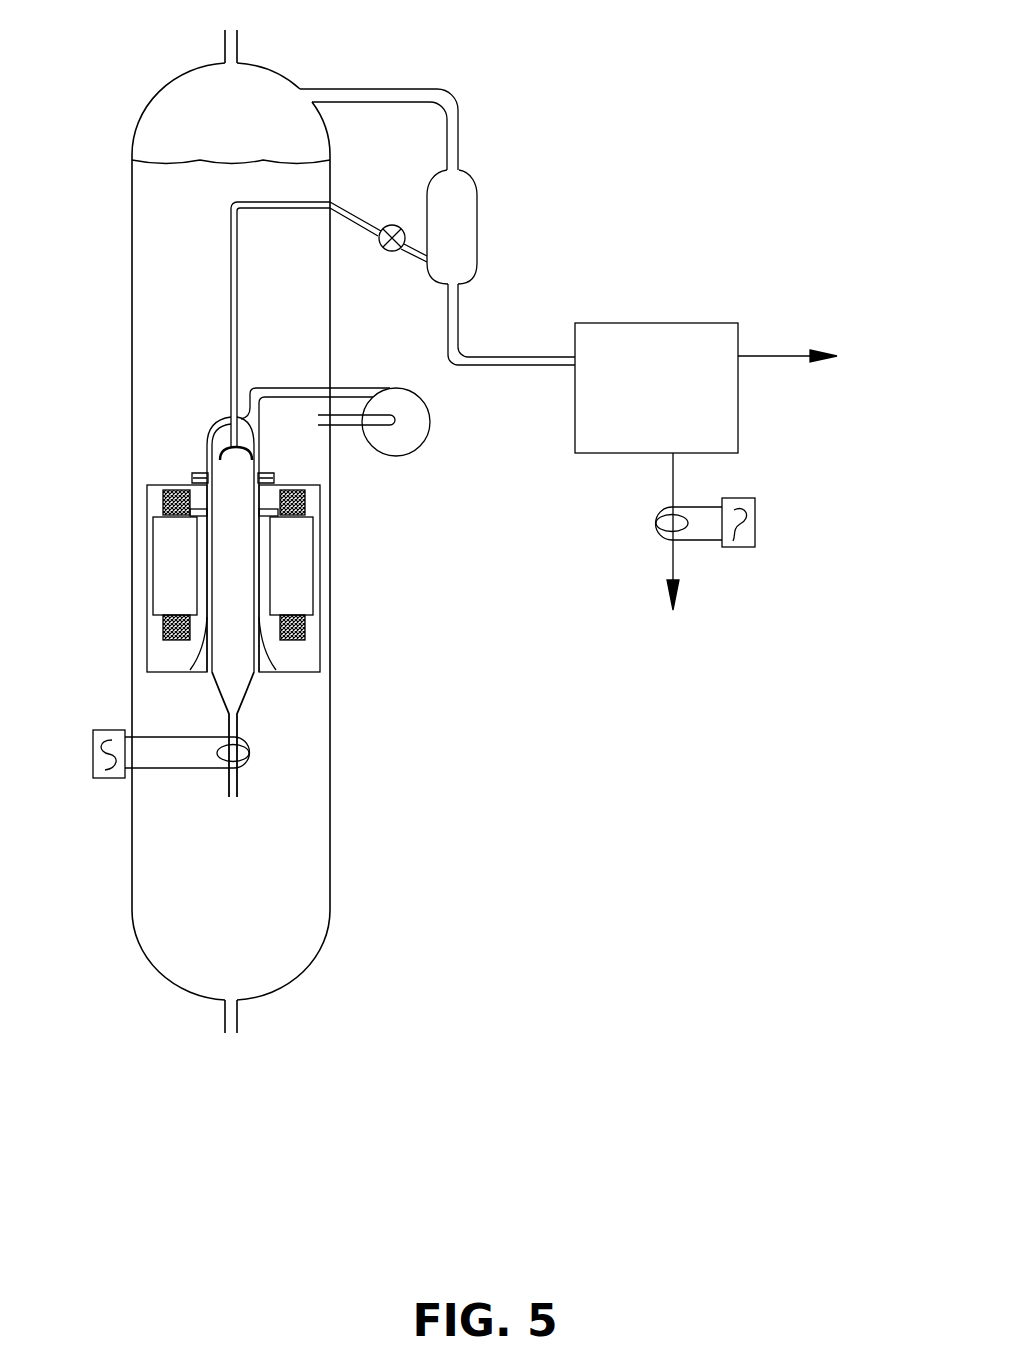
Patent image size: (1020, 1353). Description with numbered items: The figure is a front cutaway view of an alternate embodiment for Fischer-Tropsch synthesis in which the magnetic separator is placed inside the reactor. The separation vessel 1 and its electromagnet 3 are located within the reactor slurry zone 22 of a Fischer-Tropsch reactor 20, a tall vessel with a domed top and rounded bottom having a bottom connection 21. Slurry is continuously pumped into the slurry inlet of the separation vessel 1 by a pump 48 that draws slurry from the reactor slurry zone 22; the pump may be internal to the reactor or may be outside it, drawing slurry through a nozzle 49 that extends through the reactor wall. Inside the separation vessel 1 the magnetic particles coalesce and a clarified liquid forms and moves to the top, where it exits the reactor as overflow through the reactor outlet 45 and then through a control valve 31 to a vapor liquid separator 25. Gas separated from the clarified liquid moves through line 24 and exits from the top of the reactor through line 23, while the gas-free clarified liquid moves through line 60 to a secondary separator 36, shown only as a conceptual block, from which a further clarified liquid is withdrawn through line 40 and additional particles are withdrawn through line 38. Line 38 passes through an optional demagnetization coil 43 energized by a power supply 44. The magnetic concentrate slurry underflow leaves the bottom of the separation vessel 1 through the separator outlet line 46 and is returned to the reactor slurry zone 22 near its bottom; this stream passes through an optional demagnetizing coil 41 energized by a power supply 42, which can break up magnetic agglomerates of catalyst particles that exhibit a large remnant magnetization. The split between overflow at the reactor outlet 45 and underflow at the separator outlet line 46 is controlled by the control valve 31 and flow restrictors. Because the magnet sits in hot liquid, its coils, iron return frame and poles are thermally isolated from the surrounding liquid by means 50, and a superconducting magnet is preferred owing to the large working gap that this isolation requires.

The separation vessel 1 is at (237, 585).
The electromagnet 3 is at (302, 572).
The Fischer-Tropsch reactor 20 is at (127, 245).
The bottom outlet 21 is at (248, 1025).
The reactor slurry zone 22 is at (157, 415).
The line 23 is at (243, 43).
The line 24 is at (380, 85).
The vapor liquid separator 25 is at (470, 228).
The control valve 31 is at (390, 257).
The secondary separator 36 is at (635, 342).
The line 38 is at (679, 552).
The line 40 is at (810, 359).
The demagnetizing coil 41 is at (208, 742).
The power supply 42 is at (108, 782).
The demagnetization coil 43 is at (650, 523).
The power supply 44 is at (748, 553).
The reactor outlet 45 is at (342, 202).
The separator outlet line 46 is at (250, 725).
The pump 48 is at (435, 445).
The nozzle 49 is at (345, 432).
The thermal isolation means 50 is at (308, 660).
The line 60 is at (467, 347).